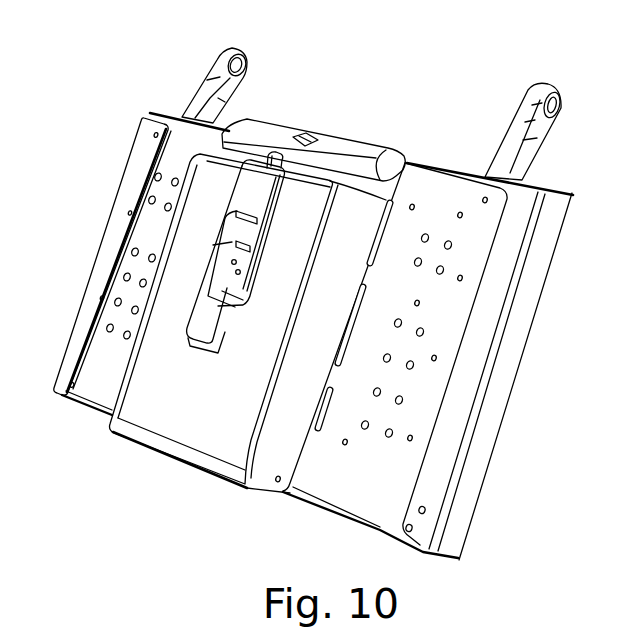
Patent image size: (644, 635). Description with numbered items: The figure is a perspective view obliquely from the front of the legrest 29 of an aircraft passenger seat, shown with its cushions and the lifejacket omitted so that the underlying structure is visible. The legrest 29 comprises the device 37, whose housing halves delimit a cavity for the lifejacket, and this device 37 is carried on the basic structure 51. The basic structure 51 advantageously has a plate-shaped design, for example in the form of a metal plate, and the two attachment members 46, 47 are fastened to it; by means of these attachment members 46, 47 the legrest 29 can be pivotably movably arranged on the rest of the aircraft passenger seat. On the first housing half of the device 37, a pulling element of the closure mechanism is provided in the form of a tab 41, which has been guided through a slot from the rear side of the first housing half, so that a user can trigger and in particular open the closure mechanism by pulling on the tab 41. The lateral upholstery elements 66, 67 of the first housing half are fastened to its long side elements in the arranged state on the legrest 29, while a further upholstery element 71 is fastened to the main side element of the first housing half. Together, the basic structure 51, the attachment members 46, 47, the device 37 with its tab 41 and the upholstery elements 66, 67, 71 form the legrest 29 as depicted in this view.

The legrest 29 is at (332, 288).
The device 37 is at (163, 485).
The tab 41 is at (193, 320).
The attachment member 46 is at (562, 96).
The attachment member 47 is at (247, 57).
The basic structure 51 is at (427, 182).
The lateral upholstery element 66 is at (278, 420).
The lateral upholstery element 67 is at (118, 372).
The further upholstery element 71 is at (210, 437).